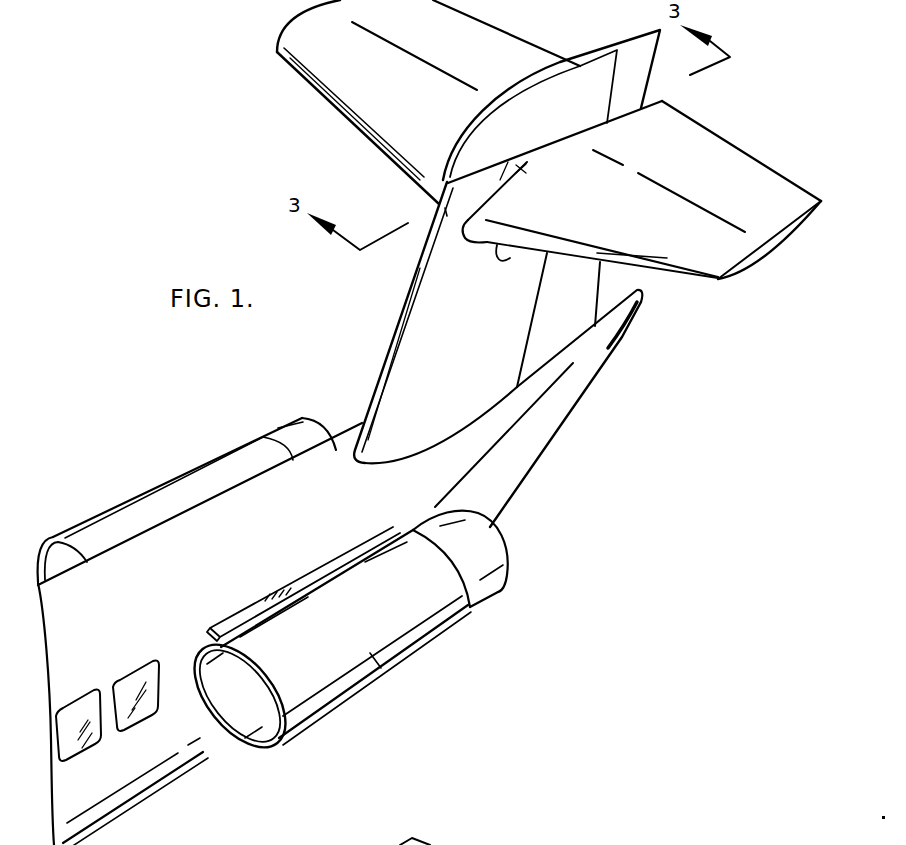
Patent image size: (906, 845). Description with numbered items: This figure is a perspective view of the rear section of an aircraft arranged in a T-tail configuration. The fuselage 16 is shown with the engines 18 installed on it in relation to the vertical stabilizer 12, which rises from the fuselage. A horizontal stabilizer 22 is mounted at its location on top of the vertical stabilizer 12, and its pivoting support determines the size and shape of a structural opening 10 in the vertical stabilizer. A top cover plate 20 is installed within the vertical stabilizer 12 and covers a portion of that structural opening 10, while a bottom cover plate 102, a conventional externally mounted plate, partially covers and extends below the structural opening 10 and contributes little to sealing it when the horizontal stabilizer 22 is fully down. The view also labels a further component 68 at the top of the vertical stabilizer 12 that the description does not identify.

The structural opening 10 is at (533, 153).
The vertical stabilizer 12 is at (393, 317).
The fuselage 16 is at (163, 767).
The engines 18 is at (158, 489).
The top cover plate 20 is at (527, 173).
The horizontal stabilizer 22 is at (353, 118).
The fin cap fairing 68 is at (581, 66).
The bottom cover plate 102 is at (500, 263).